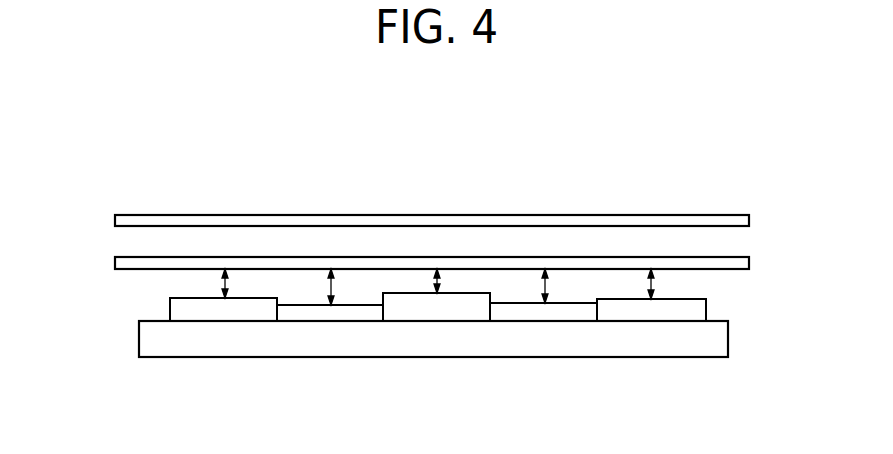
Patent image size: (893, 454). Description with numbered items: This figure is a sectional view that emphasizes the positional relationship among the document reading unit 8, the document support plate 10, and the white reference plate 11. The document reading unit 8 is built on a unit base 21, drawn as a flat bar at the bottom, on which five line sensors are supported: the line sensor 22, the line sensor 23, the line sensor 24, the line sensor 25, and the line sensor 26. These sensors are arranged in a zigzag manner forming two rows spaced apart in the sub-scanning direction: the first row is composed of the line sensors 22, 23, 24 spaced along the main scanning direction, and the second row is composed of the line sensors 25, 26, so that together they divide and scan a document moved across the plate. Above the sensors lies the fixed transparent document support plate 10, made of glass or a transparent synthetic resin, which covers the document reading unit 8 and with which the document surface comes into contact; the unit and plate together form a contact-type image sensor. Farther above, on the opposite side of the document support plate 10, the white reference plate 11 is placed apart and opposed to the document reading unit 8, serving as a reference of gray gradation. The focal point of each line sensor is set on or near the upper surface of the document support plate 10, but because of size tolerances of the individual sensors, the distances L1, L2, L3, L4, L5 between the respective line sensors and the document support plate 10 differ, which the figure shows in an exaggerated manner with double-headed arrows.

The document reading unit 8 is at (267, 359).
The document support plate 10 is at (371, 262).
The white reference plate 11 is at (450, 218).
The unit base 21 is at (168, 336).
The line sensor CIS22 22 is at (170, 310).
The line sensor CIS23 23 is at (435, 312).
The line sensor CIS24 24 is at (650, 312).
The line sensor CIS25 25 is at (320, 312).
The line sensor CIS26 26 is at (543, 312).
The distance between line sensor CIS22 and document support plate L1 is at (242, 285).
The distance between line sensor CIS23 and document support plate L2 is at (454, 283).
The distance between line sensor CIS24 and document support plate L3 is at (669, 285).
The distance between line sensor CIS25 and document support plate L4 is at (349, 287).
The distance between line sensor CIS26 and document support plate L5 is at (563, 286).